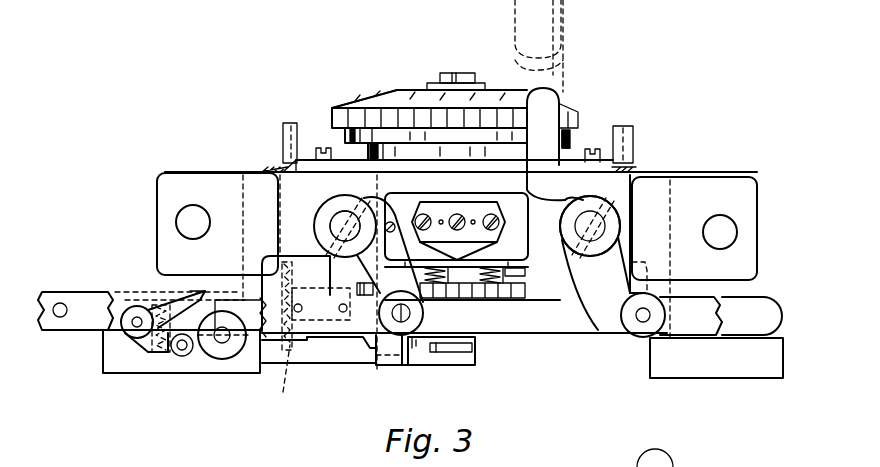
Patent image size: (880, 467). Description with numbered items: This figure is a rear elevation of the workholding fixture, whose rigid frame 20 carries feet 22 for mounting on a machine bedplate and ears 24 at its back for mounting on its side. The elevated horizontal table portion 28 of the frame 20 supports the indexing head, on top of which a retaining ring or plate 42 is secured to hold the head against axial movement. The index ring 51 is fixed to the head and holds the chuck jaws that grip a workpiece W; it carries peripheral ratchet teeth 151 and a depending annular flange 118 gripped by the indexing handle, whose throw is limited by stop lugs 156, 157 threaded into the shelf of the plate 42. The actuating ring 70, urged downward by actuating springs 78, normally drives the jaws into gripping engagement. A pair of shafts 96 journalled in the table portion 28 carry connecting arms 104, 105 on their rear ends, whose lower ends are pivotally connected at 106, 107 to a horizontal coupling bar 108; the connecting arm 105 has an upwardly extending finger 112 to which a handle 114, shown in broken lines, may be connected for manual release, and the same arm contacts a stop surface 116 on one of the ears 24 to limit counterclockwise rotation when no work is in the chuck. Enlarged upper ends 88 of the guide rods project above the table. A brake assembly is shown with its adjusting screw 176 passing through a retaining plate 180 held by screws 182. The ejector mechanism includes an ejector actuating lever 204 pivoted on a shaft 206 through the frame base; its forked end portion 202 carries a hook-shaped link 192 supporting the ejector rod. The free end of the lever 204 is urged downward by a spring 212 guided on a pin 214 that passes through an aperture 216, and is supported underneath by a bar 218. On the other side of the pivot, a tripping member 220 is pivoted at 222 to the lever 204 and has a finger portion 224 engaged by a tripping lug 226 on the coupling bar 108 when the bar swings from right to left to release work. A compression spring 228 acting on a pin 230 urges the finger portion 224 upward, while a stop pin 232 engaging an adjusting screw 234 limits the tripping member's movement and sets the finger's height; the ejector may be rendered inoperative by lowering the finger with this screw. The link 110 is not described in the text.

The frame 20 is at (664, 173).
The feet 22 is at (103, 365).
The ears 24 is at (160, 190).
The horizontal table portion 28 is at (285, 185).
The retaining ring or plate 42 is at (282, 160).
The index ring 51 is at (373, 100).
The actuating ring 70 is at (486, 292).
The actuating springs 78 is at (460, 287).
The enlarged upper ends of guide rods 88 is at (291, 125).
The shafts 96 is at (345, 225).
The connecting arm 104 is at (392, 270).
The connecting arm 105 is at (617, 287).
The pivotal connection 106 is at (406, 316).
The pivotal connection 107 is at (650, 315).
The coupling bar 108 is at (540, 336).
The link 110 is at (40, 292).
The finger 112 is at (562, 104).
The handle 114 is at (566, 52).
The stop surface 116 is at (640, 266).
The depending annular flange 118 is at (333, 118).
The ratchet teeth 151 is at (336, 108).
The stop lug 156 is at (594, 149).
The stop lug 157 is at (323, 148).
The adjusting screw 176 is at (472, 210).
The retaining plate 180 is at (438, 205).
The screws 182 is at (500, 233).
The hook-shaped link 192 is at (472, 348).
The forked end portion 202 is at (465, 366).
The ejector actuating lever 204 is at (332, 357).
The shaft 206 is at (222, 360).
The spring 212 is at (299, 277).
The pin 214 is at (262, 278).
The aperture 216 is at (284, 377).
The bar 218 is at (388, 356).
The tripping member 220 is at (147, 334).
The pivot 222 is at (137, 316).
The finger portion 224 is at (190, 290).
The tripping lug 226 is at (345, 282).
The compression spring 228 is at (160, 354).
The pin 230 is at (178, 300).
The stop pin 232 is at (188, 356).
The adjusting screw 234 is at (262, 296).
The workpiece W is at (466, 73).